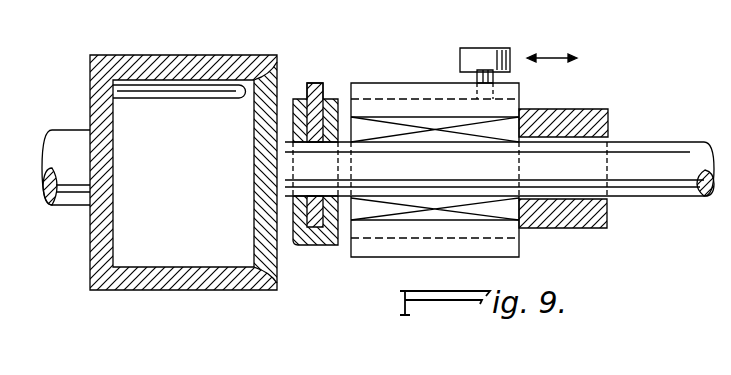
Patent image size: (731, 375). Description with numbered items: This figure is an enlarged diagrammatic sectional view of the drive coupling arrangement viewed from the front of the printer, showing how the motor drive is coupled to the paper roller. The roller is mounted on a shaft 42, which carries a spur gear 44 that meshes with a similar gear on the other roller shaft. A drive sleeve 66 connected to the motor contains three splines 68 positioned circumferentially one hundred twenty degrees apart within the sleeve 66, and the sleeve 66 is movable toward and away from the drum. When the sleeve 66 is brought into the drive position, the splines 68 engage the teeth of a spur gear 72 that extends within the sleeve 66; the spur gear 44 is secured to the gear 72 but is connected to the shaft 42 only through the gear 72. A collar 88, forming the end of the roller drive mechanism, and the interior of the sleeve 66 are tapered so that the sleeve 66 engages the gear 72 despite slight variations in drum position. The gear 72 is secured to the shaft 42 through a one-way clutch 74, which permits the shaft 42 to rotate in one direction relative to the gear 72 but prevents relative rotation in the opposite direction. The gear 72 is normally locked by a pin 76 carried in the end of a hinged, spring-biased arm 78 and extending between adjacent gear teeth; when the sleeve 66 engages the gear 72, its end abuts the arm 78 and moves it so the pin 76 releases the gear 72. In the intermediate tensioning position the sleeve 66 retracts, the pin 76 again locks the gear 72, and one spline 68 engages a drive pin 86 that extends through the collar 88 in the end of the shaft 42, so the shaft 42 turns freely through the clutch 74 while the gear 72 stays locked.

The shaft 42 is at (672, 199).
The spur gear 44 is at (608, 118).
The drive sleeve 66 is at (185, 55).
The splines 68 is at (230, 88).
The spur gear 72 is at (403, 83).
The one-way clutch 74 is at (385, 112).
The pin 76 is at (477, 78).
The arm 78 is at (475, 48).
The drive pin 86 is at (303, 98).
The collar 88 is at (322, 246).